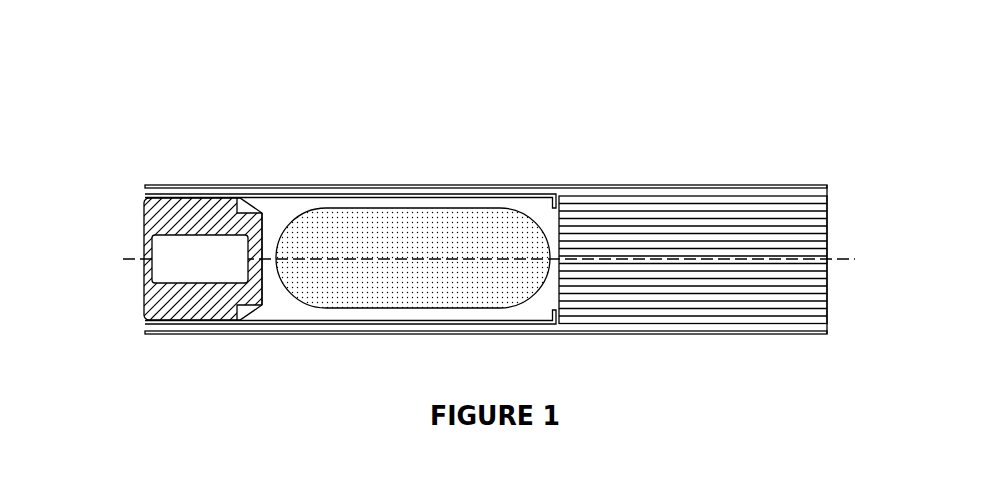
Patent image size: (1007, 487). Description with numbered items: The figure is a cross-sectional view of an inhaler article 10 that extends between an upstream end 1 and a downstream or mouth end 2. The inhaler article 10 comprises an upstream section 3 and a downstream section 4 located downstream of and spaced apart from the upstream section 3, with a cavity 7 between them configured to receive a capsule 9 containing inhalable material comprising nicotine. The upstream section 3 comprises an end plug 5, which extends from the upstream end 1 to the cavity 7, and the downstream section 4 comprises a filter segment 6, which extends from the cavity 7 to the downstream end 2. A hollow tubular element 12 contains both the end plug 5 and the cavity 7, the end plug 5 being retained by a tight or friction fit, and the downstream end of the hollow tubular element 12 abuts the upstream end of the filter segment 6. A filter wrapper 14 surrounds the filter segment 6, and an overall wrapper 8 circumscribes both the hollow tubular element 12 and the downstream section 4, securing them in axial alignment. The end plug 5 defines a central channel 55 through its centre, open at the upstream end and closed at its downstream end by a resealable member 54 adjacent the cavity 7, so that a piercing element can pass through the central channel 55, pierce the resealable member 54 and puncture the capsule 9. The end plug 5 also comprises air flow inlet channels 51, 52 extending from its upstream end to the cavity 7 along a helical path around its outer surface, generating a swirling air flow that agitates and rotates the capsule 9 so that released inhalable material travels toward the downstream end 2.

The upstream end 1 is at (130, 226).
The downstream end 2 is at (547, 260).
The upstream section 3 is at (191, 243).
The downstream section 4 is at (693, 256).
The end plug 5 is at (187, 213).
The filter segment 6 is at (708, 300).
The cavity 7 is at (527, 210).
The overall wrapper 8 is at (803, 333).
The capsule 9 is at (403, 237).
The inhaler article 10 is at (364, 216).
The hollow tubular element 12 is at (407, 319).
The filter wrapper 14 is at (798, 193).
The air flow inlet channel 51 is at (243, 205).
The air flow inlet channel 52 is at (252, 308).
The resealable member 54 is at (258, 263).
The central channel 55 is at (160, 250).